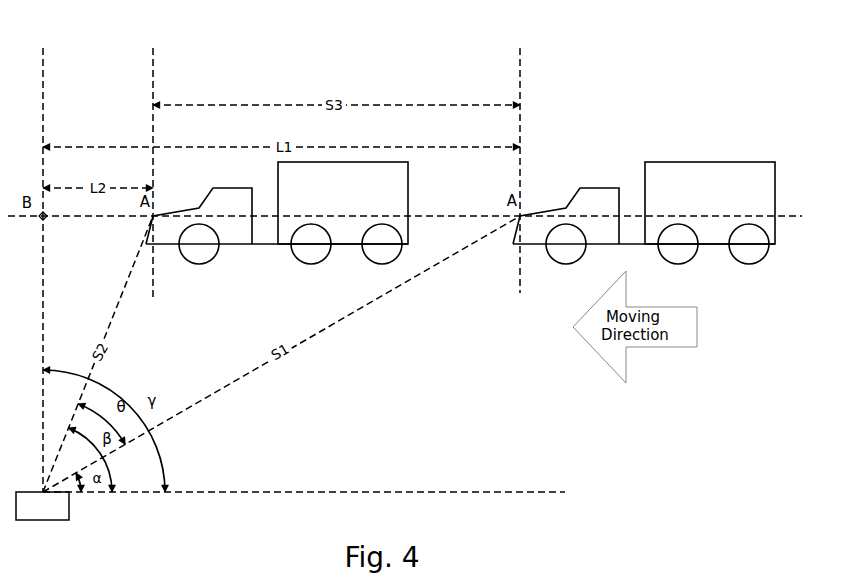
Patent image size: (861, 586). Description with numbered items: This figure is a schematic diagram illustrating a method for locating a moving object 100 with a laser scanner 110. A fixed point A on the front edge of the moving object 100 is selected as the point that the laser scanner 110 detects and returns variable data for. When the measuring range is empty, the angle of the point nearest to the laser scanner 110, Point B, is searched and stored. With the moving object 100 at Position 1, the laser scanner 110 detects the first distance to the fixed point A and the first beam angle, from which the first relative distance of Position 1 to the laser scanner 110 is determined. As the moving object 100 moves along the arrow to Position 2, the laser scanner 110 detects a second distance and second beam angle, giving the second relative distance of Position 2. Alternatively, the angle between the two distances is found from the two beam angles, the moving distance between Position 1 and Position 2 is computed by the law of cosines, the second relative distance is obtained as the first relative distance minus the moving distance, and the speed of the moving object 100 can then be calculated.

The moving object 100 is at (670, 177).
The laser scanner 110 is at (42, 506).
The Position 1 is at (520, 155).
The Position 2 is at (153, 157).